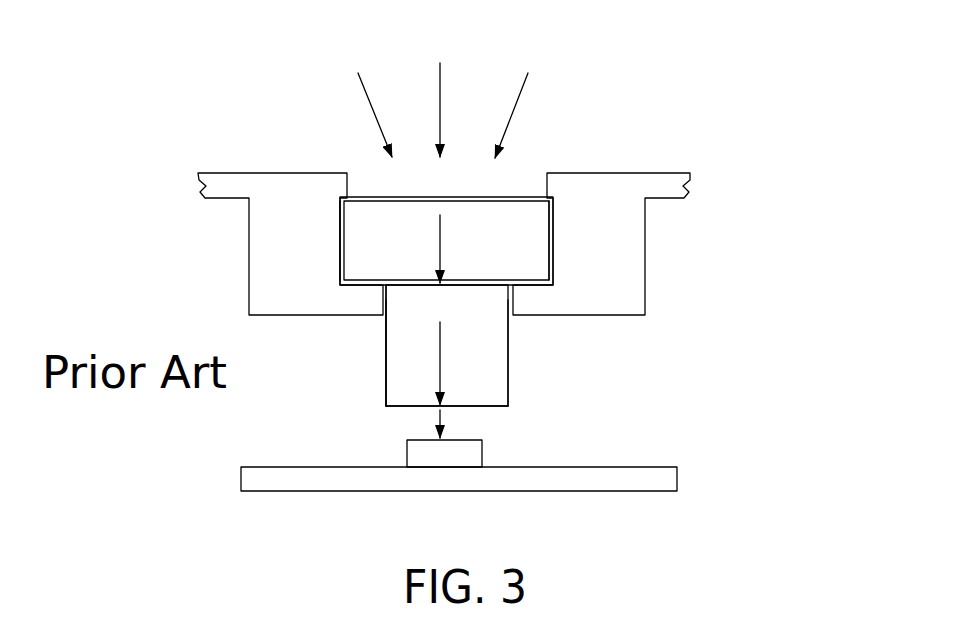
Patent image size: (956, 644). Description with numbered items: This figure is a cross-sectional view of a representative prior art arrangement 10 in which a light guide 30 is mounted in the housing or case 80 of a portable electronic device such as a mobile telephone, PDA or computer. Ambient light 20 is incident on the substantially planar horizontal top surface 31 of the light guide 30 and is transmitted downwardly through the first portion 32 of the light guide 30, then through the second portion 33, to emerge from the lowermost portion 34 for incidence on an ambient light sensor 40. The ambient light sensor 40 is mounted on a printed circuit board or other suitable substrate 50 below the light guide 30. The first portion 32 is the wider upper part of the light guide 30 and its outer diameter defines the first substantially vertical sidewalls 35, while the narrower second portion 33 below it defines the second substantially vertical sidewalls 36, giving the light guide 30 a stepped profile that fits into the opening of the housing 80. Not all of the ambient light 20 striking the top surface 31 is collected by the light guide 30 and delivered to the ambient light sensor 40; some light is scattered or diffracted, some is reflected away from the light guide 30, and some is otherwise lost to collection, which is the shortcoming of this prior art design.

The prior art imprint lithography system 10 is at (728, 100).
The ambient light 20 is at (443, 237).
The light guide 30 is at (418, 310).
The substantially planar horizontal top surface 31 is at (520, 198).
The first portion 32 is at (537, 257).
The second portion 33 is at (490, 348).
The lowermost portion 34 is at (394, 407).
The first substantially vertical sidewalls 35 is at (340, 236).
The second substantially vertical sidewalls 36 is at (385, 378).
The ambient light sensor 40 is at (484, 450).
The substrate 50 is at (677, 472).
The housing 80 is at (644, 188).